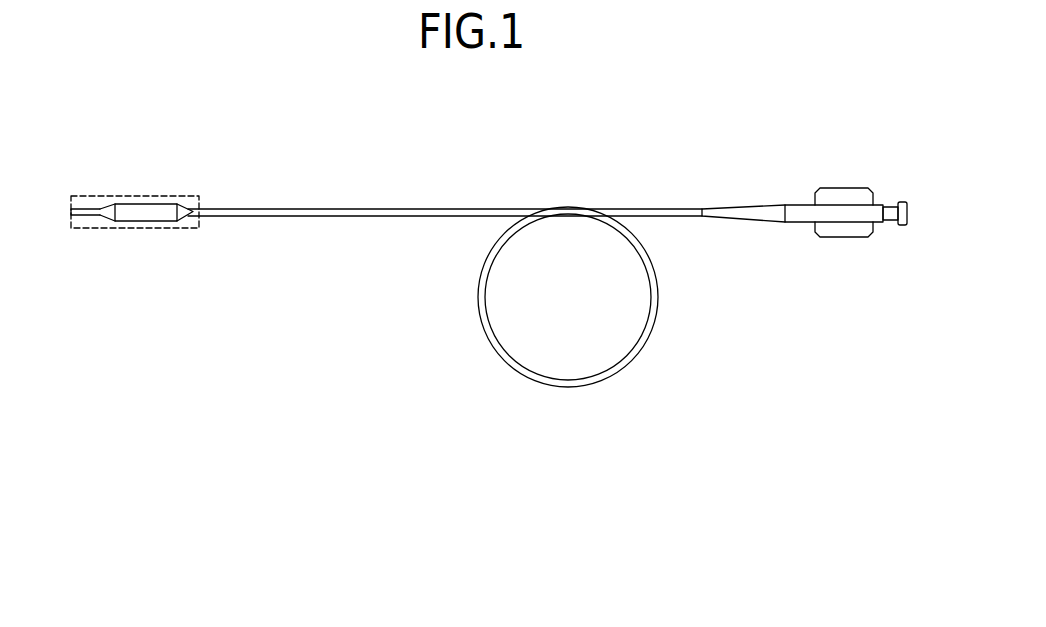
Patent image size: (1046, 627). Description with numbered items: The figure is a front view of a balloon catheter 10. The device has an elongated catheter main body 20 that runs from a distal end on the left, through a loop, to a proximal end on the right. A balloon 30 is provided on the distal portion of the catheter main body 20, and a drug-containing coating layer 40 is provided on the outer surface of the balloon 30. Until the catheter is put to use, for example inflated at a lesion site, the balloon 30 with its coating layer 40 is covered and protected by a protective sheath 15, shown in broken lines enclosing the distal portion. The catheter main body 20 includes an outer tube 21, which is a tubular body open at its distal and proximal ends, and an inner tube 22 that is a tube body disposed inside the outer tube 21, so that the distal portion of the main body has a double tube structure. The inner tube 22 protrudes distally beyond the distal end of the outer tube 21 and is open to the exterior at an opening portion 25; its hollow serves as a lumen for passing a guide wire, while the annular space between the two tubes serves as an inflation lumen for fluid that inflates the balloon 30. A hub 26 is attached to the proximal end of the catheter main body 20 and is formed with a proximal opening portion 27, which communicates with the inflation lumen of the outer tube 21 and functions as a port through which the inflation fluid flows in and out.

The balloon catheter 10 is at (176, 159).
The protective sheath 15 is at (177, 230).
The catheter main body 20 is at (357, 208).
The outer tube 21 is at (213, 225).
The inner tube 22 is at (88, 230).
The opening portion 25 is at (427, 208).
The hub 26 is at (805, 213).
The proximal opening portion 27 is at (906, 225).
The balloon 30 is at (108, 205).
The drug-containing coating layer 40 is at (155, 222).